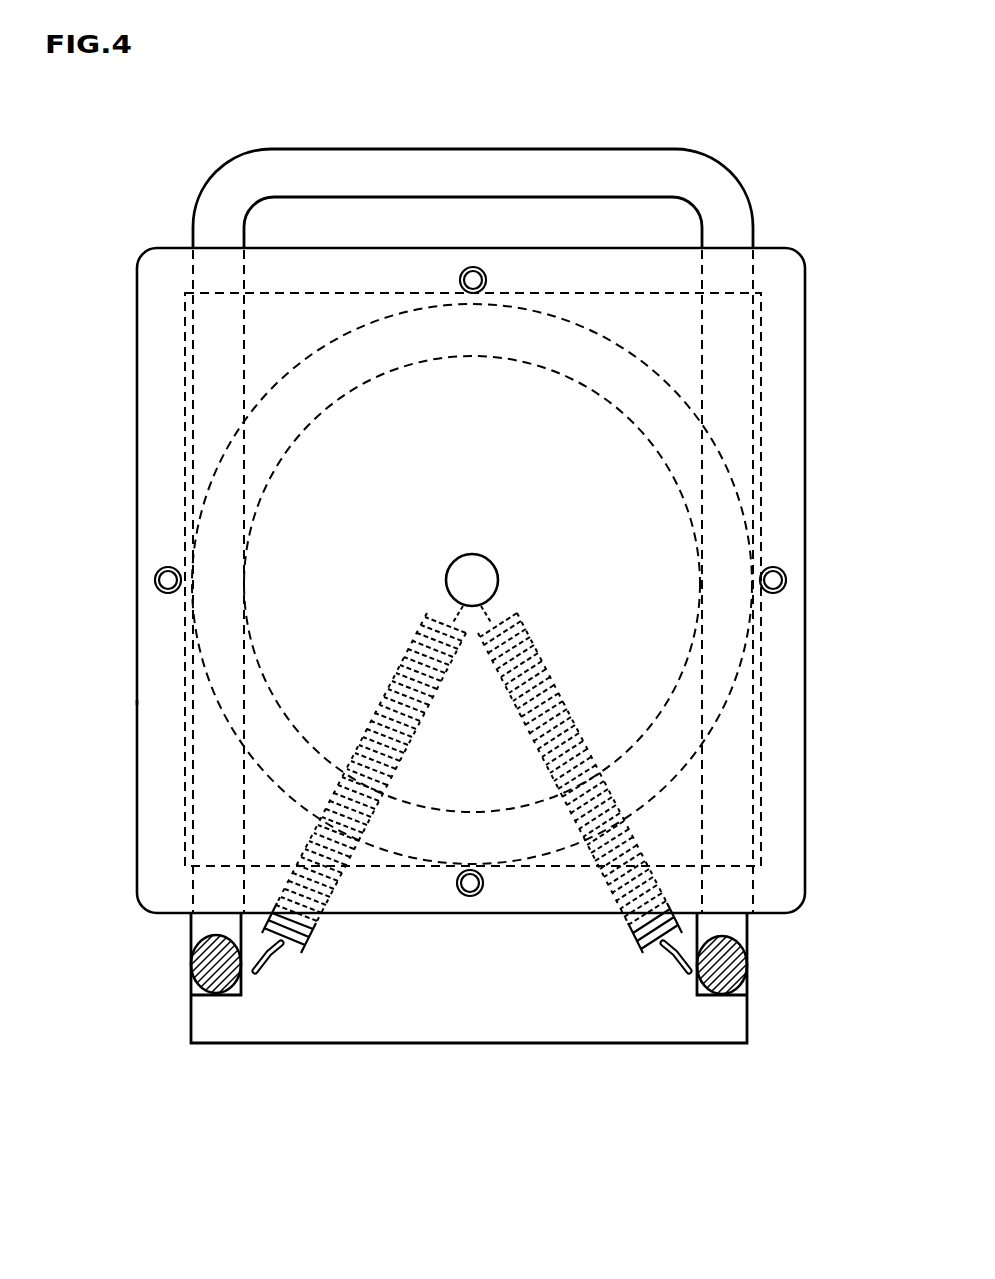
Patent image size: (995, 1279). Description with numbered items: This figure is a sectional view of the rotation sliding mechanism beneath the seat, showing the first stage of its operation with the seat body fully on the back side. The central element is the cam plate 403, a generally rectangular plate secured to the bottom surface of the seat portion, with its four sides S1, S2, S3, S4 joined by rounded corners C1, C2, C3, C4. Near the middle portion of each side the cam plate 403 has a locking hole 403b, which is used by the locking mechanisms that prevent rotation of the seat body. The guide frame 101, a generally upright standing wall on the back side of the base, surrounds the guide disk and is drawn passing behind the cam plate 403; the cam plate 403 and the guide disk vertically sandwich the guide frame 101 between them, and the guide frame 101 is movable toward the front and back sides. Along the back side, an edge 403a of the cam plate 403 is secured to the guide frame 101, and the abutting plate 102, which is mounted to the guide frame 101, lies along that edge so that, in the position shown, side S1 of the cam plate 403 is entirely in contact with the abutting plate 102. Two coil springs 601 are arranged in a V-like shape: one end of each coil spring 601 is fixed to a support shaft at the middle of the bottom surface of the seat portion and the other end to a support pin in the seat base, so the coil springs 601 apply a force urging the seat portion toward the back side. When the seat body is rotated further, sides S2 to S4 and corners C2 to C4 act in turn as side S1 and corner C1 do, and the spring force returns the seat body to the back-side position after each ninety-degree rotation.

The guide frame 101 is at (657, 168).
The abutting plate 102 is at (682, 1023).
The cam plate 403 is at (215, 808).
The edge of cam plate 403a is at (148, 698).
The locking holes 403b is at (473, 280).
The coil spring 601 is at (302, 935).
The side of cam plate S1 is at (540, 915).
The side of cam plate S2 is at (138, 405).
The side of cam plate S3 is at (318, 247).
The side of cam plate S4 is at (806, 458).
The corner of cam plate C1 is at (797, 907).
The corner of cam plate C2 is at (150, 910).
The corner of cam plate C3 is at (152, 250).
The corner of cam plate C4 is at (800, 253).